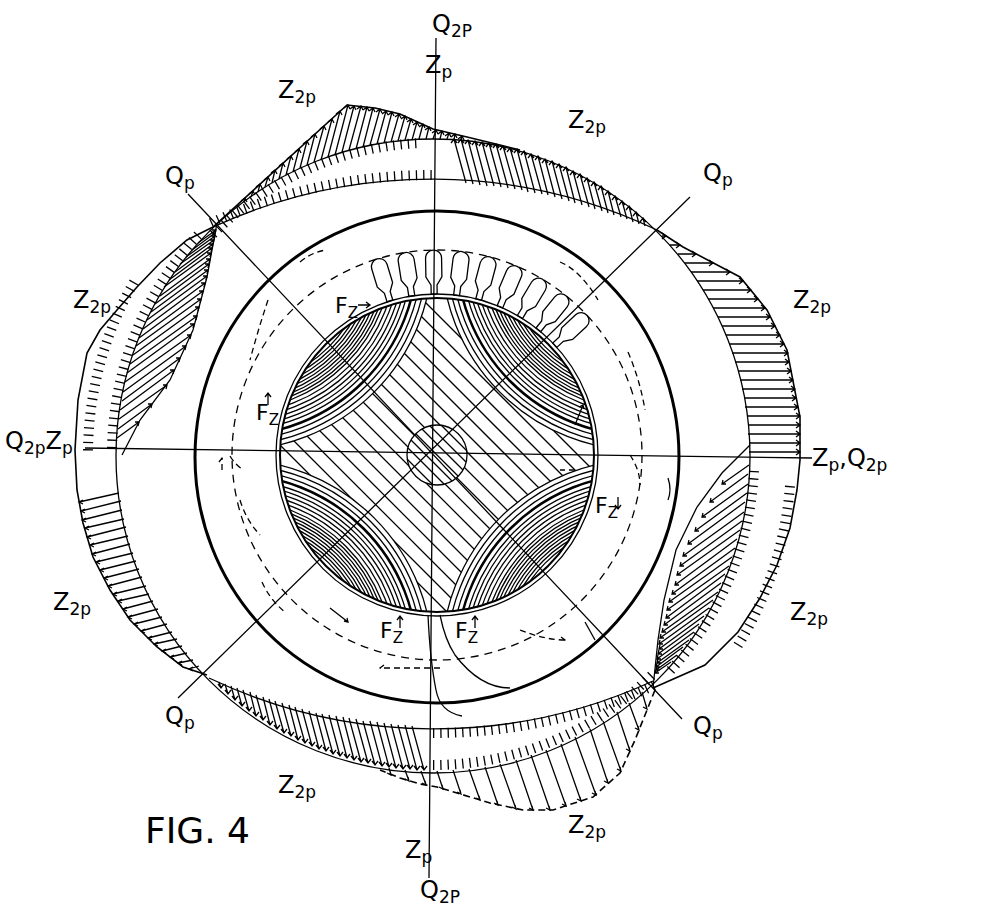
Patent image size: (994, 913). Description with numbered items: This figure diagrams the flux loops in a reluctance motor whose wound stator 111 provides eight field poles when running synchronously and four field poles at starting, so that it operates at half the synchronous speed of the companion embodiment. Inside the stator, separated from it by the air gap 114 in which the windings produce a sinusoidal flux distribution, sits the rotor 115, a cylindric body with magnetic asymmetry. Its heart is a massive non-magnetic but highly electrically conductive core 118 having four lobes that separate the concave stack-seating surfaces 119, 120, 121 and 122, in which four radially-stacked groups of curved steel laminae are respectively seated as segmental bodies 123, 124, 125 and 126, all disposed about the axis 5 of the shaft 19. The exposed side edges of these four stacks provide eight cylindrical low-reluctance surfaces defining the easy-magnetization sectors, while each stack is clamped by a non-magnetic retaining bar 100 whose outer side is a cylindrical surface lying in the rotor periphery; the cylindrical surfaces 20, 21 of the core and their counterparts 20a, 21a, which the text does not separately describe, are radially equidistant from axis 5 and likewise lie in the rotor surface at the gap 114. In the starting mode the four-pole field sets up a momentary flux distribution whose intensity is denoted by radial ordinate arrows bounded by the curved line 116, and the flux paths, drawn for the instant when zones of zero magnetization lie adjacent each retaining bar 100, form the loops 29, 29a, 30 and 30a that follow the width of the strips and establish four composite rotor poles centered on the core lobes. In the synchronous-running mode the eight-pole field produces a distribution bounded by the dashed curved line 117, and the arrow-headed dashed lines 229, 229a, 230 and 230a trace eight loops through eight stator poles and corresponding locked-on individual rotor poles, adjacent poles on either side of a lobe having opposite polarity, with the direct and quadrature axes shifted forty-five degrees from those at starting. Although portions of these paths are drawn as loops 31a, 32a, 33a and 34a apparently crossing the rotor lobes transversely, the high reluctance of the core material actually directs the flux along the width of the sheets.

The axis 5 is at (425, 470).
The shaft 19 is at (452, 465).
The cylindrical surface 20 is at (450, 295).
The stator bore lower portion 20a is at (470, 672).
The cylindrical surface 21 is at (235, 456).
The stator pole 21a is at (575, 470).
The loop 29 is at (312, 262).
The loop 29a is at (322, 609).
The arrow-headed dashed line 229 is at (268, 300).
The arrow-headed dashed line 229a is at (262, 590).
The loop 30 is at (598, 300).
The loop 30a is at (604, 646).
The arrow-headed dashed line 230 is at (628, 352).
The arrow-headed dashed line 230a is at (545, 627).
The loop 31a is at (244, 496).
The loop 32a is at (668, 478).
The loop 33a is at (424, 249).
The loop 34a is at (410, 680).
The retaining bar 100 is at (555, 566).
The stator 111 is at (664, 402).
The air gap 114 is at (585, 420).
The rotor 115 is at (510, 692).
The bounding curved line 116 is at (160, 262).
The dashed bounding curved line 117 is at (347, 100).
The core 118 is at (448, 401).
The concave stack-seating surface 119 is at (372, 396).
The concave stack-seating surface 120 is at (490, 392).
The concave stack-seating surface 121 is at (641, 659).
The concave stack-seating surface 122 is at (233, 659).
The segmental body 123 is at (233, 251).
The segmental body 124 is at (641, 251).
The segmental body 125 is at (641, 659).
The segmental body 126 is at (233, 659).